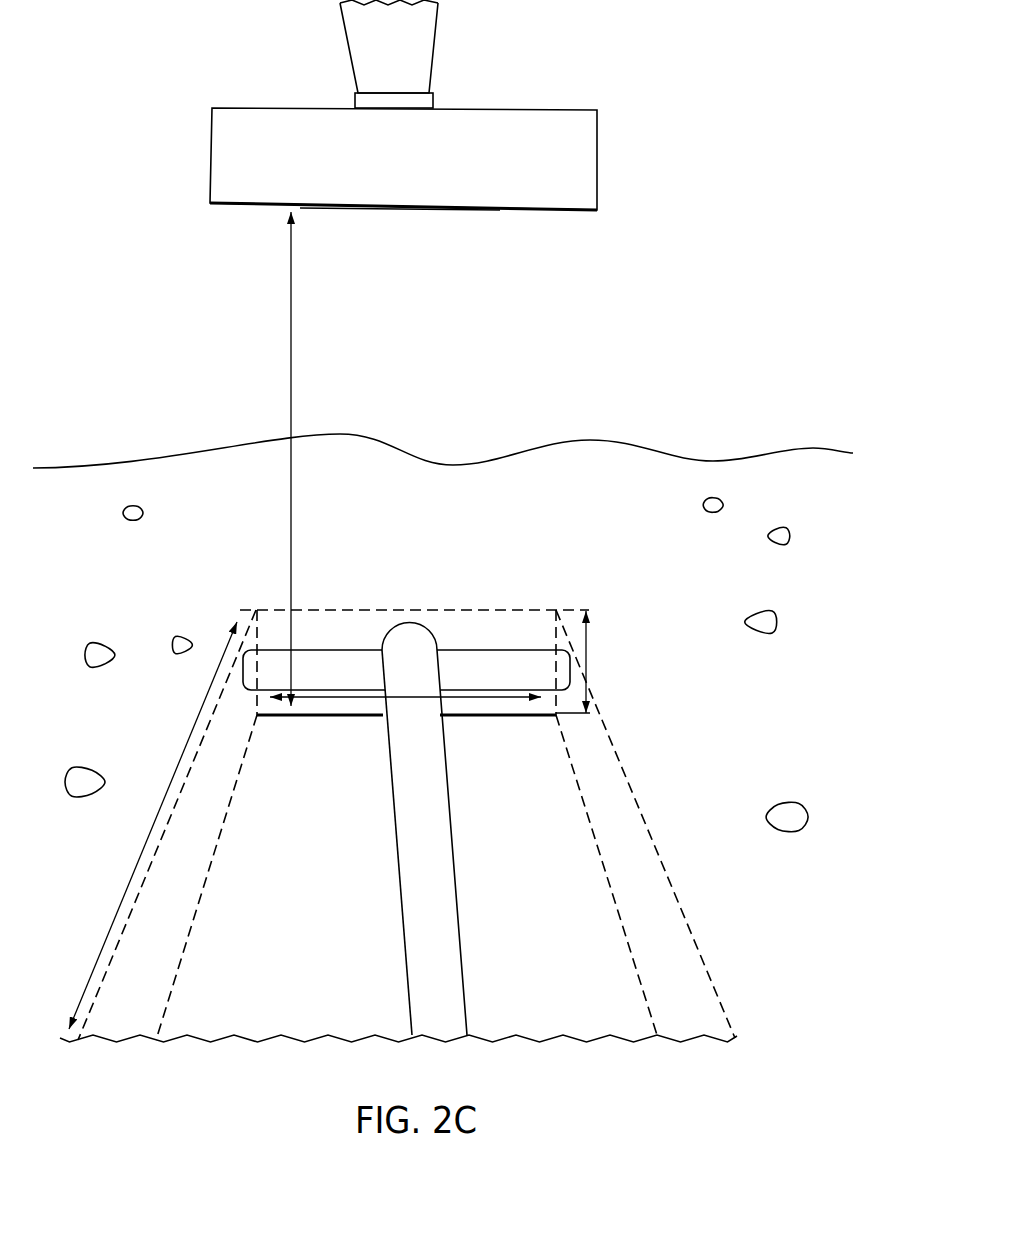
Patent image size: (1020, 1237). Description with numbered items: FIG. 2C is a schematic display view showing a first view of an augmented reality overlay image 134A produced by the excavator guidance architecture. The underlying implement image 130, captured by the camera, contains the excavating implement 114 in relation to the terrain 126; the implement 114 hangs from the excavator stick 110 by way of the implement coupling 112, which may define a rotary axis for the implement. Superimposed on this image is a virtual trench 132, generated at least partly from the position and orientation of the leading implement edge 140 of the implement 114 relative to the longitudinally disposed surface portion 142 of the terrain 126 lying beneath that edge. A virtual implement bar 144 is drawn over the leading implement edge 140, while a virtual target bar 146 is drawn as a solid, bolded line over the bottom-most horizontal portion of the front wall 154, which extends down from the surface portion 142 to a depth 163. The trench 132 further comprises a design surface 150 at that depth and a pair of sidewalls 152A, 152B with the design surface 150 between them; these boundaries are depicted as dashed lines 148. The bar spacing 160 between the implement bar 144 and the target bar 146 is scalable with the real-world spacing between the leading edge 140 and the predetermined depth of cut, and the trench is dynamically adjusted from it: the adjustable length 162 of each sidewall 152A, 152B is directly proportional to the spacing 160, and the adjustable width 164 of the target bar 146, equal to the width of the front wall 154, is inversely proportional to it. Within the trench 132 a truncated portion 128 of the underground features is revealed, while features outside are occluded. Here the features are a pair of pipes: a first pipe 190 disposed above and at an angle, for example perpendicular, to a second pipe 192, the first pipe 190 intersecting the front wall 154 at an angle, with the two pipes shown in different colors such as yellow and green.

The excavator stick 110 is at (423, 32).
The implement coupling 112 is at (433, 97).
The excavating implement 114 is at (597, 145).
The terrain 126 is at (799, 702).
The truncated portion 128 is at (570, 775).
The implement image 130 is at (735, 207).
The augmented reality overlay image 134A is at (667, 248).
The virtual trench 132 is at (705, 948).
The leading implement edge 140 is at (557, 214).
The longitudinally disposed surface portion 142 is at (543, 607).
The virtual implement bar 144 is at (410, 208).
The virtual target bar 146 is at (490, 717).
The dashed lines 148 is at (683, 824).
The design surface 150 is at (566, 995).
The sidewall 152A is at (158, 1007).
The sidewall 152B is at (709, 1000).
The front wall 154 is at (406, 631).
The bar spacing 160 is at (292, 346).
The adjustable length 162 is at (178, 767).
The depth 163 is at (589, 664).
The adjustable width 164 is at (487, 690).
The first pipe 190 is at (444, 850).
The second pipe 192 is at (352, 665).